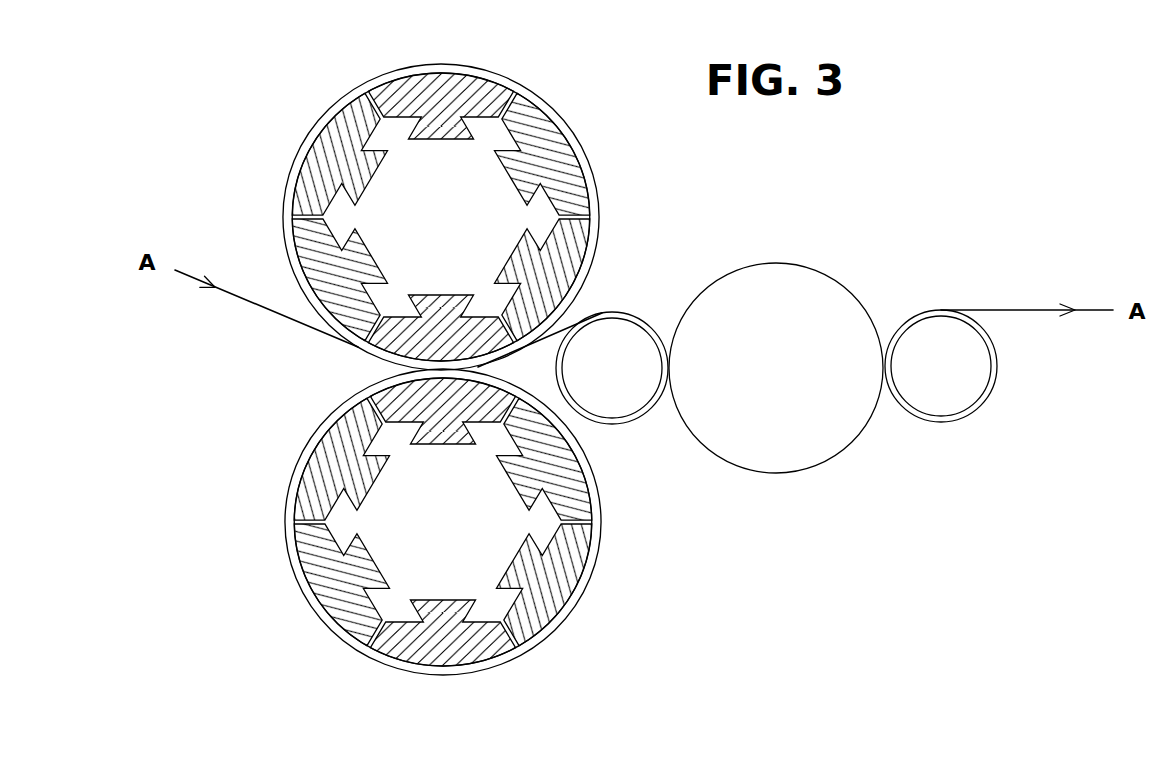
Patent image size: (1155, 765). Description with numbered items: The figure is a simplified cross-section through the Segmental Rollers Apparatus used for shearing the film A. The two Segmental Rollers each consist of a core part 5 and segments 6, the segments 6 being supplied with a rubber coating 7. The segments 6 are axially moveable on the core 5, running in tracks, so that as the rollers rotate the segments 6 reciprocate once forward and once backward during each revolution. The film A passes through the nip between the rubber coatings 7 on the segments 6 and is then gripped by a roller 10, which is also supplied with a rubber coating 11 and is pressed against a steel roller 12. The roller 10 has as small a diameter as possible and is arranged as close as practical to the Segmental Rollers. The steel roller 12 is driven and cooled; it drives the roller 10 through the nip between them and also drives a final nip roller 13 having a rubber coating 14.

The core part 5 is at (442, 368).
The segments 6 is at (456, 95).
The rubber coating 7 is at (328, 112).
The roller 10 is at (612, 386).
The rubber coating 11 is at (618, 421).
The steel roller 12 is at (761, 372).
The final nip roller 13 is at (949, 379).
The rubber coating 14 is at (965, 412).